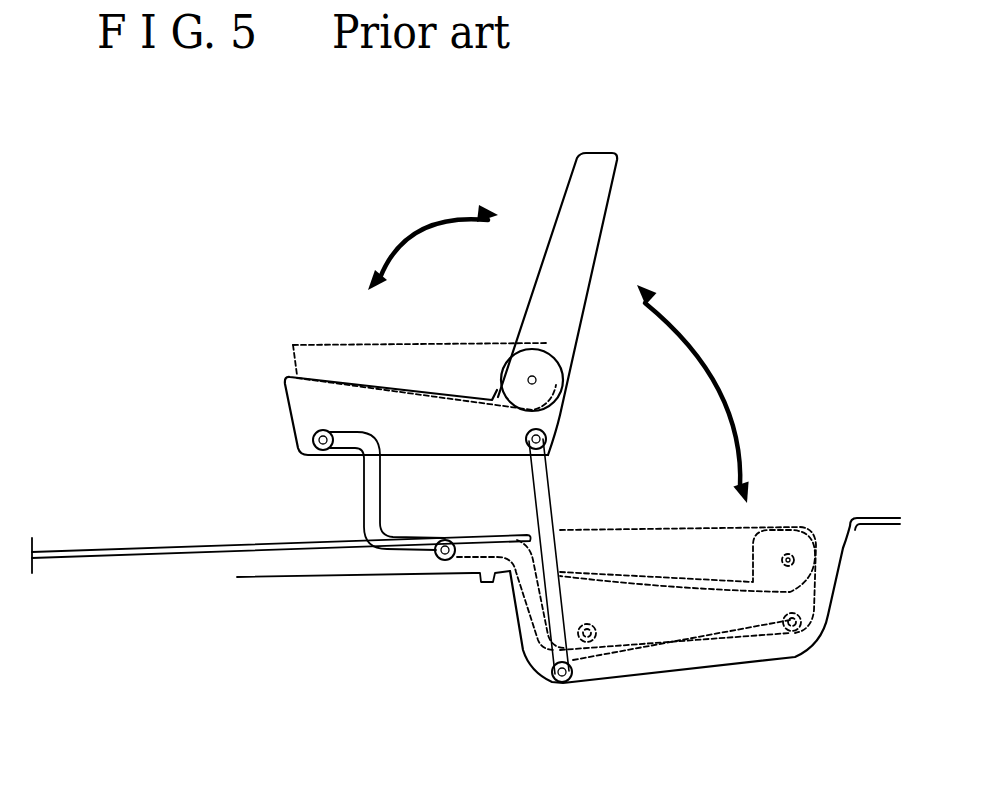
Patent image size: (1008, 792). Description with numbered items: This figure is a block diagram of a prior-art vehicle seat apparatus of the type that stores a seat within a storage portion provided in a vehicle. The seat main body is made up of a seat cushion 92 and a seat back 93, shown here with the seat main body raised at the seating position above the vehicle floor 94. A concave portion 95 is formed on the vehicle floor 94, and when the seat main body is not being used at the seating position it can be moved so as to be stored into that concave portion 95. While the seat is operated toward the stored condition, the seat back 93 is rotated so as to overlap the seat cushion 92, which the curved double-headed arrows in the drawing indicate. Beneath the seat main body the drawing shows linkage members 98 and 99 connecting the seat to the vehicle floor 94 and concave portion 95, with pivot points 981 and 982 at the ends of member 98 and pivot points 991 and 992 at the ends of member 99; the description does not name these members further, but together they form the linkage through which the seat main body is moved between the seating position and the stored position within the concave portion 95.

The seat cushion 92 is at (287, 403).
The seat back 93 is at (598, 263).
The vehicle floor 94 is at (133, 552).
The concave portion 95 is at (837, 563).
The link 98 is at (532, 380).
The pivot 981 is at (546, 436).
The pivot 982 is at (560, 683).
The link 99 is at (373, 507).
The pivot 991 is at (320, 450).
The pivot 992 is at (443, 560).